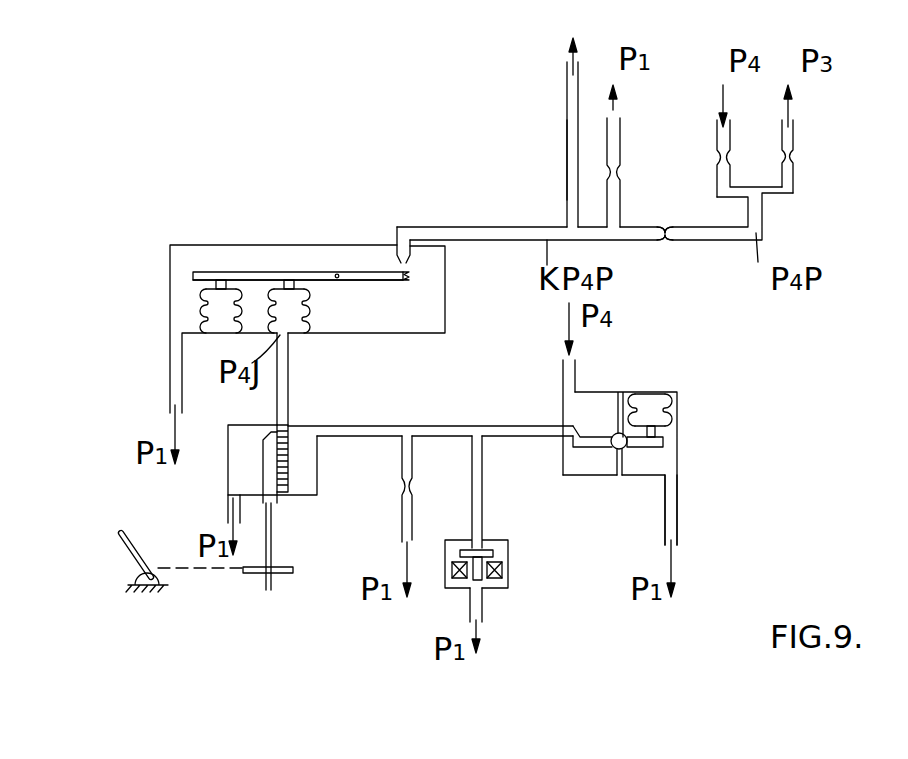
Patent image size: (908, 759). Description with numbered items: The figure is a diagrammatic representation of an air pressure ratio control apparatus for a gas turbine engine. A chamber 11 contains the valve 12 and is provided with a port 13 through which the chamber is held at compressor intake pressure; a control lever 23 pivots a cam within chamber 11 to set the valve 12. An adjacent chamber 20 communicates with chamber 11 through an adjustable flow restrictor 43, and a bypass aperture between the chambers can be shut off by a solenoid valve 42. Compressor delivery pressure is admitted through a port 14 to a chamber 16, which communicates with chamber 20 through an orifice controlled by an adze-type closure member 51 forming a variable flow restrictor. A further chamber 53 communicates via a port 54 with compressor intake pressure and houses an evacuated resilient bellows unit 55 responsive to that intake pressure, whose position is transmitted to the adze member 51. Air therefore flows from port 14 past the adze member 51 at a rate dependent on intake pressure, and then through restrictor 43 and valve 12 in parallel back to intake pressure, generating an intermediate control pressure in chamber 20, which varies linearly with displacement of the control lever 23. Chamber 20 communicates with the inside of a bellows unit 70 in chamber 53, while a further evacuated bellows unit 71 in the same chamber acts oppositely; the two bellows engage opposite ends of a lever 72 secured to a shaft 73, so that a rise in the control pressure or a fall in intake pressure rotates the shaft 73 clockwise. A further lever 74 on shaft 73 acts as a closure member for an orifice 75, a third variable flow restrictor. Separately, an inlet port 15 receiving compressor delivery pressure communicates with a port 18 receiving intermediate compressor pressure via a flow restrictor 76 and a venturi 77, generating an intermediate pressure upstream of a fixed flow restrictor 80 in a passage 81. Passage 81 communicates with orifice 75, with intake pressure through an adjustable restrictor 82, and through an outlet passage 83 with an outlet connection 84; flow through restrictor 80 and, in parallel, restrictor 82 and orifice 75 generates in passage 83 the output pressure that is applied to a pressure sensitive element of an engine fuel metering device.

The chamber 11 is at (245, 460).
The valve 12 is at (304, 417).
The port 13 is at (228, 503).
The port 14 is at (562, 388).
The inlet port 15 is at (722, 130).
The chamber 16 is at (595, 405).
The port 18 is at (793, 132).
The chamber 20 is at (303, 477).
The control lever 23 is at (125, 548).
The solenoid valve 42 is at (522, 564).
The adjustable flow restrictor 43 is at (392, 480).
The adze-type closure member 51 is at (578, 448).
The chamber 53 is at (660, 465).
The port 54 is at (680, 543).
The evacuated resilient bellows unit 55 is at (650, 410).
The bellows unit 70 is at (296, 310).
The bellows unit 71 is at (204, 305).
The lever 72 is at (258, 272).
The shaft 73 is at (337, 272).
The lever 74 is at (375, 280).
The orifice 75 is at (405, 264).
The flow restrictor 76 is at (717, 158).
The venturi 77 is at (795, 160).
The fixed flow restrictor 80 is at (665, 243).
The passage 81 is at (497, 226).
The adjustable restrictor 82 is at (618, 172).
The outlet passage 83 is at (567, 120).
The outlet connection 84 is at (568, 78).